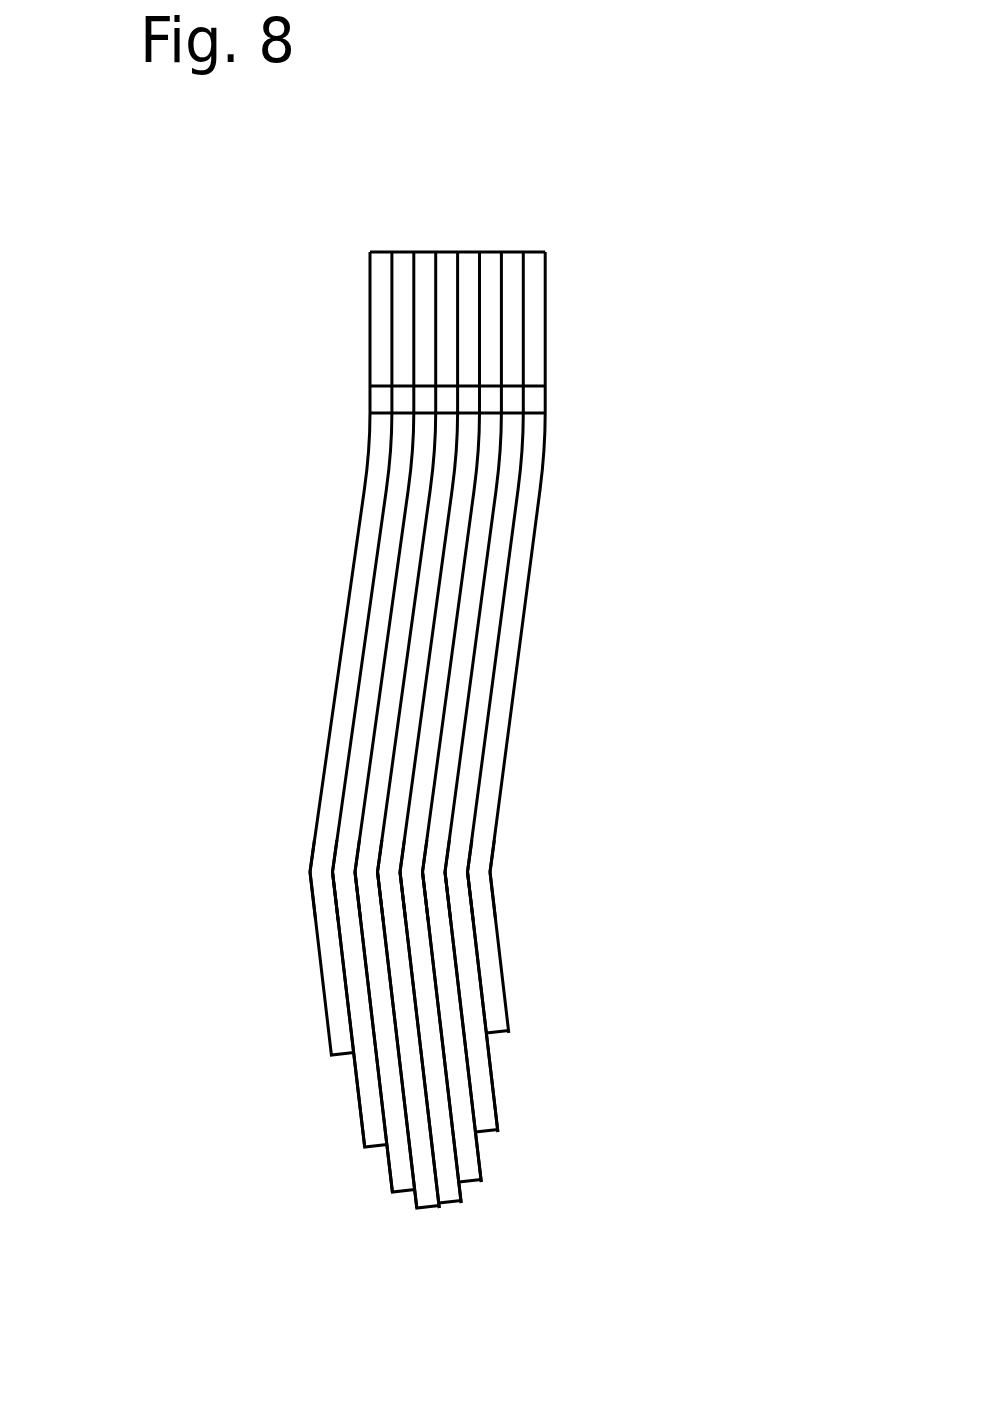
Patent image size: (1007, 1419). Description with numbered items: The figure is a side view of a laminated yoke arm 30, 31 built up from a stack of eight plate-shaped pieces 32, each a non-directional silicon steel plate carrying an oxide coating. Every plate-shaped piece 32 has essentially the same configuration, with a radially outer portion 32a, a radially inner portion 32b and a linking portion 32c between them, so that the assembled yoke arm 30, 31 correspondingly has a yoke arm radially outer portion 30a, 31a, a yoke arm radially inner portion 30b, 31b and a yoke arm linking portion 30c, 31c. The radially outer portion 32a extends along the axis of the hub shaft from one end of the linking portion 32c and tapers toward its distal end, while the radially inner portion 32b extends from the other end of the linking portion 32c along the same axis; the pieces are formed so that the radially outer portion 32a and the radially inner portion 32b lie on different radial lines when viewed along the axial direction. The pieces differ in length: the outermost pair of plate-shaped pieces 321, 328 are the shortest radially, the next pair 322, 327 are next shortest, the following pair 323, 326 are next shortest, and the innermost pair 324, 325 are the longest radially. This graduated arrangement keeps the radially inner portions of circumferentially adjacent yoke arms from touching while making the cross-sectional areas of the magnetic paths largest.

The laminated yoke arm 30 is at (523, 200).
The laminated yoke arm 31 is at (411, 758).
The plate-shaped piece 32 is at (383, 260).
The yoke arm radially outer portion 30a is at (343, 304).
The yoke arm radially outer portion 31a is at (555, 326).
The yoke arm radially inner portion 30b is at (327, 589).
The yoke arm radially inner portion 31b is at (499, 642).
The yoke arm linking portion 30c is at (293, 961).
The yoke arm linking portion 31c is at (417, 1102).
The radially outer portion 32a is at (551, 327).
The radially inner portion 32b is at (480, 913).
The linking portion 32c is at (507, 632).
The plate-shaped piece 321 is at (337, 1013).
The plate-shaped piece 322 is at (373, 1110).
The plate-shaped piece 323 is at (400, 1175).
The plate-shaped piece 324 is at (423, 1210).
The plate-shaped piece 325 is at (452, 1210).
The plate-shaped piece 326 is at (465, 1173).
The plate-shaped piece 327 is at (482, 1117).
The plate-shaped piece 328 is at (493, 1010).